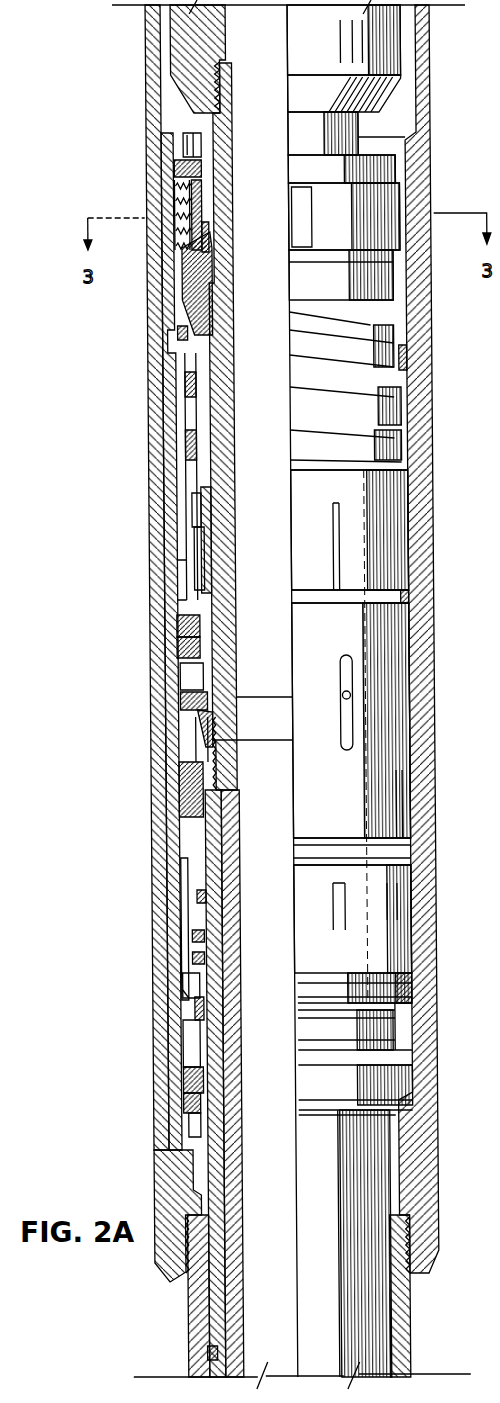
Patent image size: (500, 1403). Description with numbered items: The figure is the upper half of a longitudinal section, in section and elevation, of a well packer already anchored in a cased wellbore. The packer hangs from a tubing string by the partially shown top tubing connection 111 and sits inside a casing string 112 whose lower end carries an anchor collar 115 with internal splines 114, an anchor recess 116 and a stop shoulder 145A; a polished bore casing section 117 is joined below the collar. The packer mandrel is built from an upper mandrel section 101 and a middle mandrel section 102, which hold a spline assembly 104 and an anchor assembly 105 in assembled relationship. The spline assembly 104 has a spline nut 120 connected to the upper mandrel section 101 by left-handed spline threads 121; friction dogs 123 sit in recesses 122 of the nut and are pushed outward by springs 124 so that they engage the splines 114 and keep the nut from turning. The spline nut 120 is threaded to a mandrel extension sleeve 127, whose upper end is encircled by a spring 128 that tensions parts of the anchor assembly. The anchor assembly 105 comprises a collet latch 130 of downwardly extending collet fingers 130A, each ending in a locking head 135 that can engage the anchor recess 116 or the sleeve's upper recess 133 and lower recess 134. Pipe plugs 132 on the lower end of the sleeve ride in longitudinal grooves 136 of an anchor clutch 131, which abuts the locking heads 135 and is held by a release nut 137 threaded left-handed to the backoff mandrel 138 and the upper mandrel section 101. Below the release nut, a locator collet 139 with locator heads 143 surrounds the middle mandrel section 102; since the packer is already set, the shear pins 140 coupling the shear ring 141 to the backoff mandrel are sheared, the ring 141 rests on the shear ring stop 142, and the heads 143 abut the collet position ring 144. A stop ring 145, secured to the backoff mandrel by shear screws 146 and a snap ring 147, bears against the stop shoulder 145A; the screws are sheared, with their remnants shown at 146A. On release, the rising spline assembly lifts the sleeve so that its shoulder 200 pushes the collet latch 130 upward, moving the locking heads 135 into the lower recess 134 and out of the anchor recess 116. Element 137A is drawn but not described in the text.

The upper mandrel section 101 is at (197, 458).
The middle mandrel section 102 is at (219, 1160).
The spline assembly 104 is at (166, 200).
The anchor assembly 105 is at (136, 636).
The top tubing connection 111 is at (182, 48).
The casing string 112 is at (151, 80).
The splines 114 is at (191, 147).
The anchor collar 115 is at (162, 154).
The anchor recess 116 is at (167, 620).
The polished bore casing section 117 is at (182, 1295).
The spline nut 120 is at (185, 273).
The left-handed spline threads 121 is at (220, 237).
The recesses 122 is at (195, 227).
The friction dogs 123 is at (403, 208).
The springs 124 is at (191, 216).
The mandrel extension sleeve 127 is at (197, 415).
The spring 128 is at (175, 330).
The collet latch 130 is at (176, 567).
The collet fingers 130A is at (381, 543).
The anchor clutch 131 is at (393, 657).
The pipe plugs 132 is at (348, 697).
The upper recess 133 is at (192, 577).
The lower recess 134 is at (198, 643).
The locking heads 135 is at (408, 607).
The longitudinal grooves 136 is at (351, 733).
The release nut 137 is at (394, 823).
The collet shoulder 137A is at (394, 782).
The backoff mandrel 138 is at (200, 872).
The locator collet 139 is at (170, 853).
The shear pins 140 is at (196, 897).
The shear ring 141 is at (171, 943).
The shear ring stop 142 is at (175, 963).
The locator heads 143 is at (184, 987).
The collet position ring 144 is at (199, 1020).
The stop ring 145 is at (171, 1103).
The stop shoulder 145A is at (406, 1092).
The shear screws 146 is at (187, 1083).
The sheared screw portions 146A is at (197, 1348).
The snap ring 147 is at (178, 1117).
The shoulder 200 is at (189, 522).